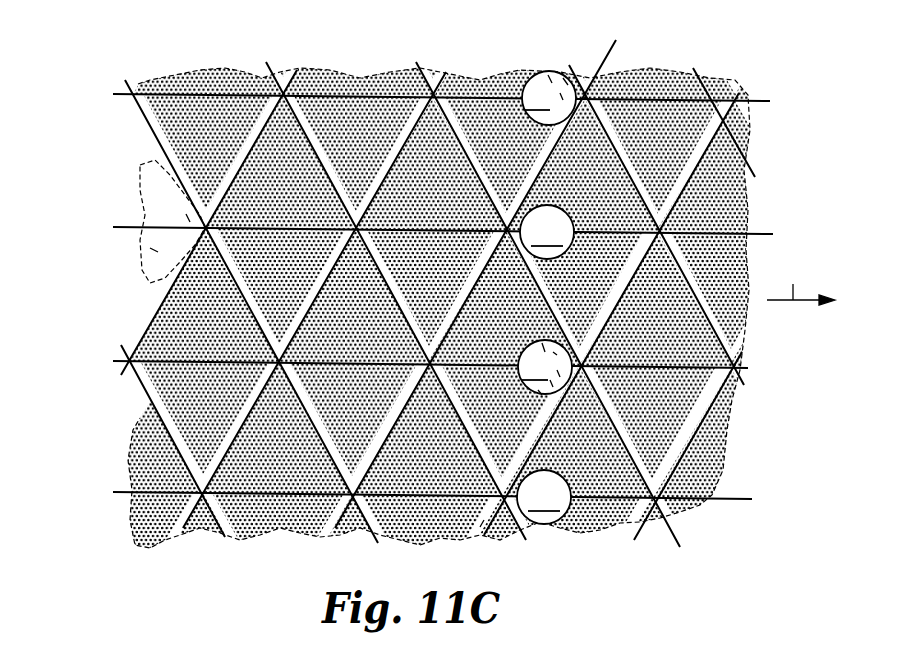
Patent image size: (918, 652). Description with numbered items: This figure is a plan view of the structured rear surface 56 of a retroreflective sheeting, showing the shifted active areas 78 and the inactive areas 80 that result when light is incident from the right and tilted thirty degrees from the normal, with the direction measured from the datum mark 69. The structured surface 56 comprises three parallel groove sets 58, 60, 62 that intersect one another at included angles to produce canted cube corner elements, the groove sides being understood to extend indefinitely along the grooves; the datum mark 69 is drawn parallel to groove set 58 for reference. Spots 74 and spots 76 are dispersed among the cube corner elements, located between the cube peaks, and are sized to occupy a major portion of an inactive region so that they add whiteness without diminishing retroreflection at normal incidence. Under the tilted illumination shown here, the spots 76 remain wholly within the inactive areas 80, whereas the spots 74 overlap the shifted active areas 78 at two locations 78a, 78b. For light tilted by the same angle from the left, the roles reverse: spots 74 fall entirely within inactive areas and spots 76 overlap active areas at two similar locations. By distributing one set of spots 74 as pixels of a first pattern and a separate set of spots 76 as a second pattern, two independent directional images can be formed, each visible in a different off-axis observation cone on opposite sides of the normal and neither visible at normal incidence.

The structured rear surface 56 is at (445, 315).
The groove set 58 is at (763, 105).
The groove set 60 is at (126, 84).
The groove set 62 is at (458, 72).
The datum mark 69 is at (801, 280).
The spots 74 is at (547, 232).
The spots 76 is at (545, 364).
The shifted active areas 78 is at (162, 167).
The overlap location 78a is at (549, 72).
The overlap location 78b is at (585, 99).
The inactive areas 80 is at (195, 218).